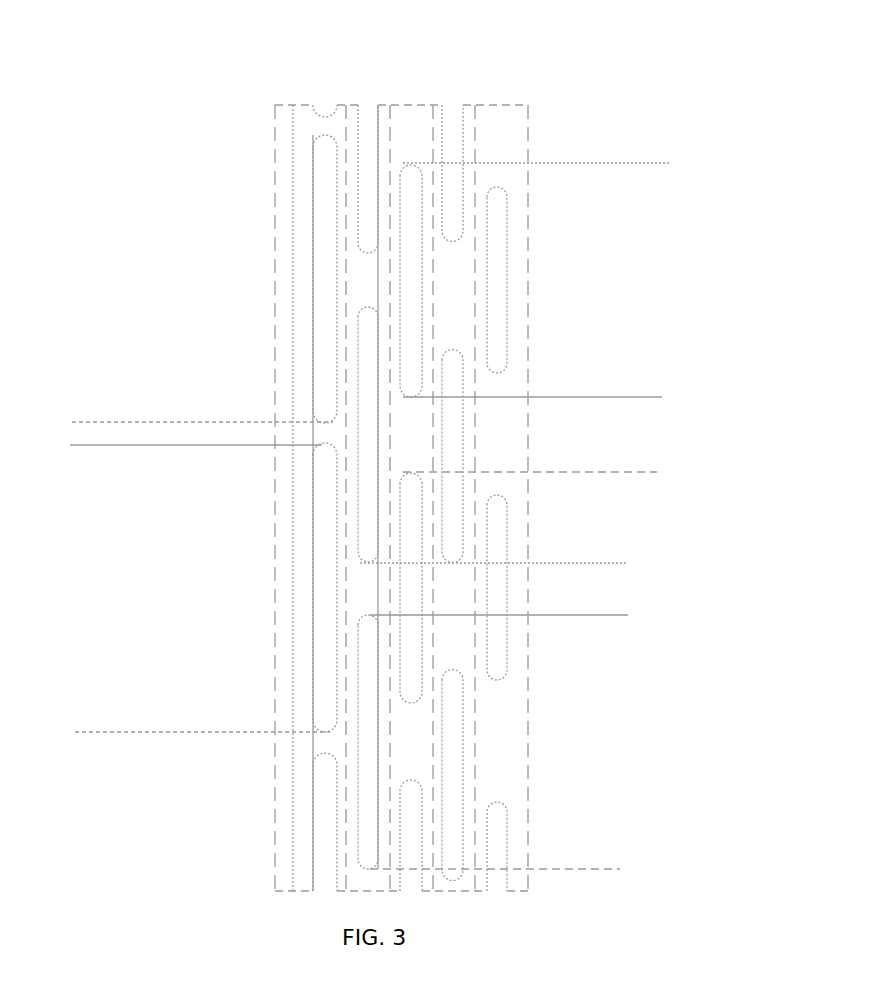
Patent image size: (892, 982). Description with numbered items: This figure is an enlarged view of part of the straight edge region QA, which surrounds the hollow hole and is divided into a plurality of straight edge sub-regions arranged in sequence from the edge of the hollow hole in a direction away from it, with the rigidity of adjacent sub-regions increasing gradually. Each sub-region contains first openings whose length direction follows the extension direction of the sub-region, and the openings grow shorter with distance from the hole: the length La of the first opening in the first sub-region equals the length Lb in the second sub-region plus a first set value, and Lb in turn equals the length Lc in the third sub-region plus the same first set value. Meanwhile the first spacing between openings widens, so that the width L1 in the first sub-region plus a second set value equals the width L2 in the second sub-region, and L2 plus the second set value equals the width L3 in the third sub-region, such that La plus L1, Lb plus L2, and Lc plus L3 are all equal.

The straight edge region QA is at (603, 85).
The width of the first spacing in the first straight edge sub-region L1 is at (123, 422).
The length of the first opening in the first straight edge sub-region La is at (123, 732).
The length of the first opening in the third straight edge sub-region Lc is at (607, 397).
The width of the first spacing in the third straight edge sub-region L3 is at (607, 397).
The width of the first spacing in the second straight edge sub-region L2 is at (565, 563).
The length of the first opening in the second straight edge sub-region Lb is at (565, 615).